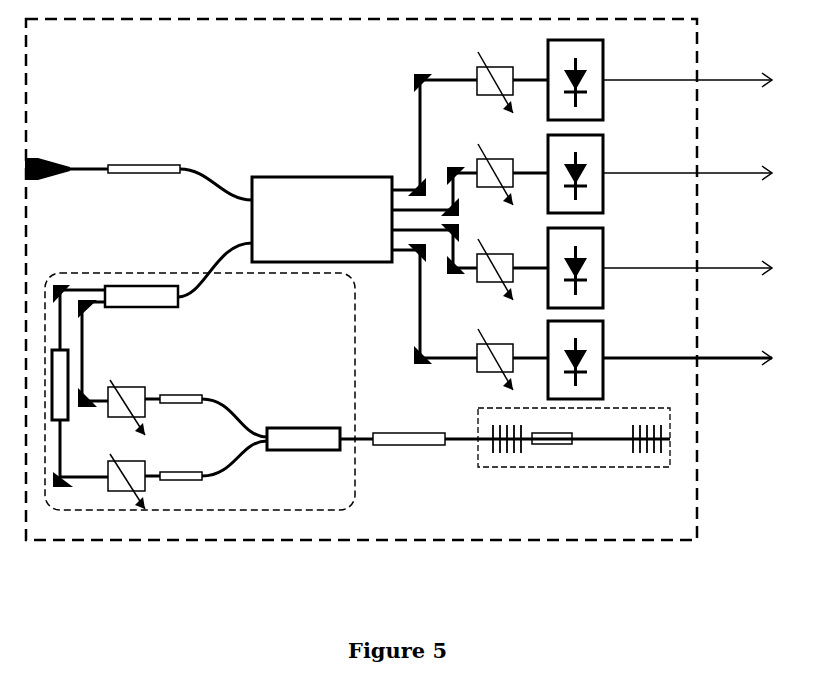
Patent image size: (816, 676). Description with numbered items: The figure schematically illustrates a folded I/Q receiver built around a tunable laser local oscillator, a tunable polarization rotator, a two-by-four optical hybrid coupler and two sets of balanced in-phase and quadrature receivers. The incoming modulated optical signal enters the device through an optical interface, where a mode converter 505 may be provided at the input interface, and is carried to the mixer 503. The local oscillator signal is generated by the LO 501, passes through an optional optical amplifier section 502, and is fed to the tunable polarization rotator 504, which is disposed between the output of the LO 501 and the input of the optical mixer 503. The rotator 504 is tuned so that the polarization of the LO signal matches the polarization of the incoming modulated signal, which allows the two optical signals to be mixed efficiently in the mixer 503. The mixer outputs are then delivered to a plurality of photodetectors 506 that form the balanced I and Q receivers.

The LO 501 is at (593, 467).
The optical amplifier section 502 is at (415, 446).
The mixer 503 is at (318, 165).
The tunable polarization rotator 504 is at (223, 510).
The mode converter 505 is at (36, 148).
The photodetectors 506 is at (610, 347).